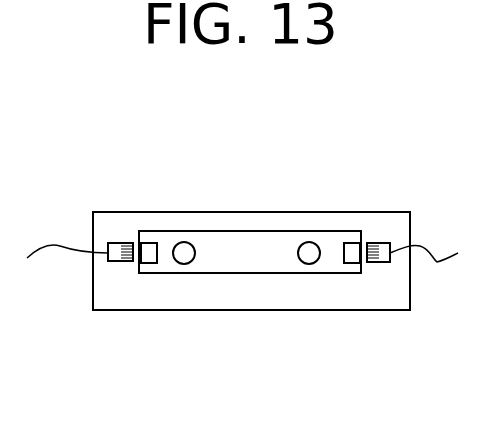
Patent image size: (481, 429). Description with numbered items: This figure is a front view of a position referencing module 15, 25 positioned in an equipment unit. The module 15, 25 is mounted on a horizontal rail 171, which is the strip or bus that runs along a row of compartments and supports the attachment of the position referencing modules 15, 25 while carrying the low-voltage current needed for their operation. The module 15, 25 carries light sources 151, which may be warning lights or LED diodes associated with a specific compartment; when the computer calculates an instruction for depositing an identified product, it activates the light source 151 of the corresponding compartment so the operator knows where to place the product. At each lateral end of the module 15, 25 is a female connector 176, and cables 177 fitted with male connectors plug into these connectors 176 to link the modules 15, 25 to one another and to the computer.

The position referencing module 15 is at (250, 191).
The position referencing module 25 is at (228, 247).
The light source 151 is at (188, 264).
The horizontal rail 171 is at (311, 212).
The female connector 176 is at (122, 243).
The cable 177 is at (67, 248).